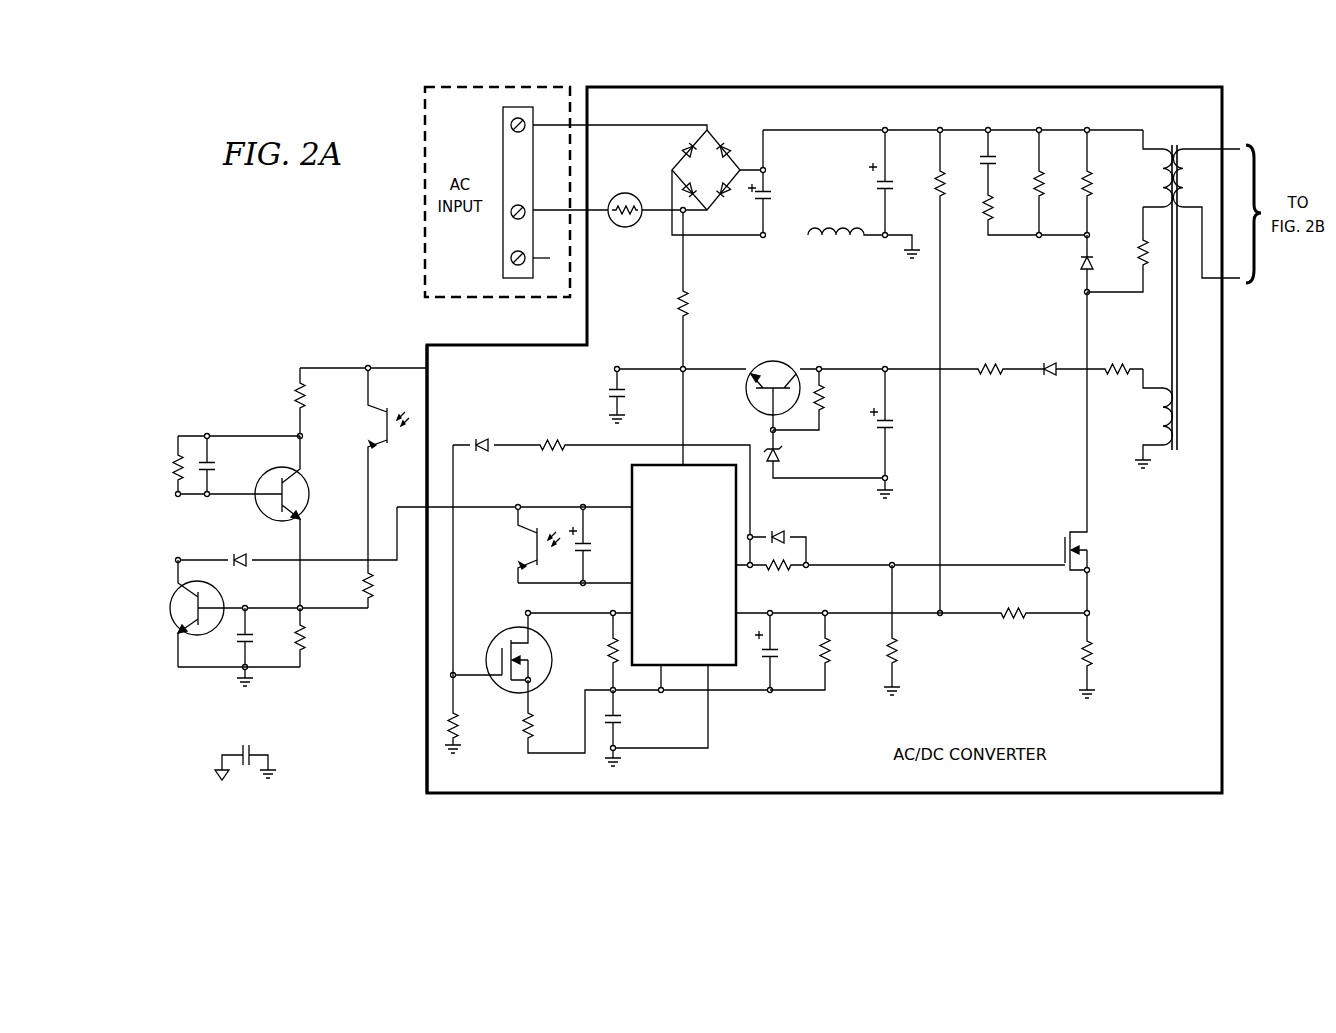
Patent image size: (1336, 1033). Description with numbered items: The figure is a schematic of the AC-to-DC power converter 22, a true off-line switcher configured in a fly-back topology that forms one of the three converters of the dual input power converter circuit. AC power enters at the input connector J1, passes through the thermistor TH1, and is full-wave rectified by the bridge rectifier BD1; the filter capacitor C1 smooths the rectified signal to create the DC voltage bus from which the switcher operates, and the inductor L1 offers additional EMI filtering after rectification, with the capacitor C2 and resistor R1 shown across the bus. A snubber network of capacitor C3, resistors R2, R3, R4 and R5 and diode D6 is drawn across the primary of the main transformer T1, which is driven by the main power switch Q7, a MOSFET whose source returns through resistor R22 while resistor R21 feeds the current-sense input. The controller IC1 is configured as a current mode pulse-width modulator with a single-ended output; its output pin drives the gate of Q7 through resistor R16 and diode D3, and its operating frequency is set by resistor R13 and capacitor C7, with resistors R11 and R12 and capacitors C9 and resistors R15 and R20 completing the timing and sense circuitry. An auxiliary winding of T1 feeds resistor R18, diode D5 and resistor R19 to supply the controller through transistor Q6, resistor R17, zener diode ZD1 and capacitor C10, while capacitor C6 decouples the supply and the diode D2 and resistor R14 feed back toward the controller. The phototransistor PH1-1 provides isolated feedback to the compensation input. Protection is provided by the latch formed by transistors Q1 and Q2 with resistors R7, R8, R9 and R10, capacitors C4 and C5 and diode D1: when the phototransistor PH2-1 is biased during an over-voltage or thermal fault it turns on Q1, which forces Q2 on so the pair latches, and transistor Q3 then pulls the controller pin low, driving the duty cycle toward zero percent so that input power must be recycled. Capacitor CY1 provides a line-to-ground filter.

The AC-to-DC power converter 22 is at (420, 664).
The AC input connector J1 is at (518, 192).
The thermistor TH1 is at (625, 200).
The full-wave bridge rectifier BD1 is at (717, 169).
The filter capacitor C1 is at (768, 184).
The inductor L1 is at (864, 228).
The capacitor C2 is at (890, 183).
The resistor R1 is at (951, 372).
The capacitor C3 is at (997, 160).
The resistor R2 is at (1035, 213).
The resistor R3 is at (1050, 183).
The resistor R4 is at (1098, 183).
The resistor R5 is at (913, 336).
The diode D6 is at (1071, 265).
The main transformer T1 is at (1187, 298).
The resistor R18 is at (990, 357).
The diode D5 is at (1049, 356).
The resistor R19 is at (1117, 357).
The transistor Q6 is at (751, 387).
The resistor R17 is at (812, 399).
The zener diode ZD1 is at (824, 454).
The capacitor C10 is at (894, 433).
The capacitor C6 is at (607, 476).
The main controller IC1 is at (674, 606).
The diode D2 is at (479, 432).
The resistor R14 is at (552, 433).
The diode D3 is at (777, 535).
The resistor R16 is at (900, 581).
The photocoupler transistor PH1-1 is at (515, 544).
The transistor Q3 is at (502, 649).
The resistor R11 is at (465, 599).
The resistor R12 is at (646, 716).
The resistor R13 is at (619, 652).
The capacitor C7 is at (623, 728).
The capacitor C9 is at (776, 652).
The resistor R15 is at (814, 651).
The resistor R20 is at (904, 630).
The resistor R21 is at (1013, 628).
The main power switch Q7 is at (1090, 452).
The resistor R22 is at (1099, 655).
The resistor R8 is at (287, 403).
The resistor R7 is at (165, 466).
The capacitor C4 is at (217, 465).
The transistor Q2 is at (298, 522).
The photocoupler transistor PH2-1 is at (366, 463).
The diode D1 is at (287, 536).
The transistor Q1 is at (256, 613).
The resistor R9 is at (379, 584).
The capacitor C5 is at (254, 647).
The resistor R10 is at (314, 637).
The Y capacitor CY1 is at (245, 750).